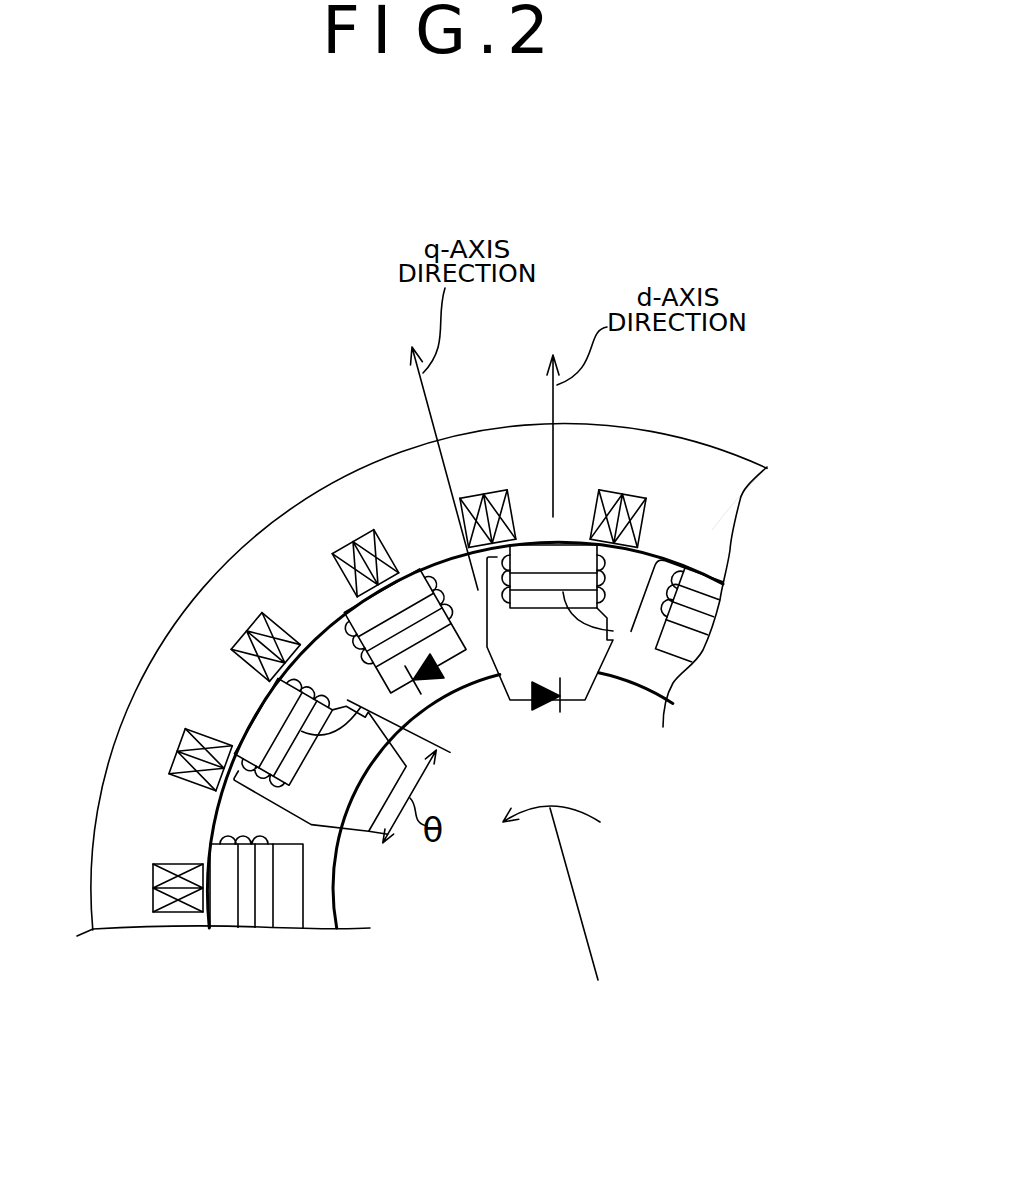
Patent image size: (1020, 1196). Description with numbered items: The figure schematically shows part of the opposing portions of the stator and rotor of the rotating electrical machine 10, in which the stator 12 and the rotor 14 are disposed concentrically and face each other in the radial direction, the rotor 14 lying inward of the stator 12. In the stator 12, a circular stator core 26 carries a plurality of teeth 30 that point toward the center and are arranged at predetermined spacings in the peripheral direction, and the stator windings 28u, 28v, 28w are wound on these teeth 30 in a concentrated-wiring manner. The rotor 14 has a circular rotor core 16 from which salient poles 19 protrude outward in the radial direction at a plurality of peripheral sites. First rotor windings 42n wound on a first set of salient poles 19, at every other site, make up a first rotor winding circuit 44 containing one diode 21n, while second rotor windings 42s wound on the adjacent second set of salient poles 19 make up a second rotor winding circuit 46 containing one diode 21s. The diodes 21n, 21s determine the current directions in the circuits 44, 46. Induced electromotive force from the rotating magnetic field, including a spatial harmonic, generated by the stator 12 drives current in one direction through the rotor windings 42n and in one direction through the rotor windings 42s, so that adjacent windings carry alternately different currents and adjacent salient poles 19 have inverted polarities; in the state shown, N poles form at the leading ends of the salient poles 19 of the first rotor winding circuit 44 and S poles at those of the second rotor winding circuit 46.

The rotating electrical machine 10 is at (753, 341).
The stator 12 is at (533, 447).
The rotor 14 is at (460, 753).
The rotor core 16 is at (600, 765).
The salient pole 19 is at (578, 553).
The diode 21n is at (447, 698).
The diode 21s is at (566, 734).
The stator core 26 is at (703, 503).
The stator winding 28u is at (247, 633).
The stator winding 28v is at (613, 483).
The stator winding 28w is at (403, 530).
The tooth 30 is at (367, 528).
The first rotor winding 42n is at (352, 621).
The second rotor winding 42s is at (496, 735).
The first rotor winding circuit 44 is at (657, 637).
The second rotor winding circuit 46 is at (258, 905).